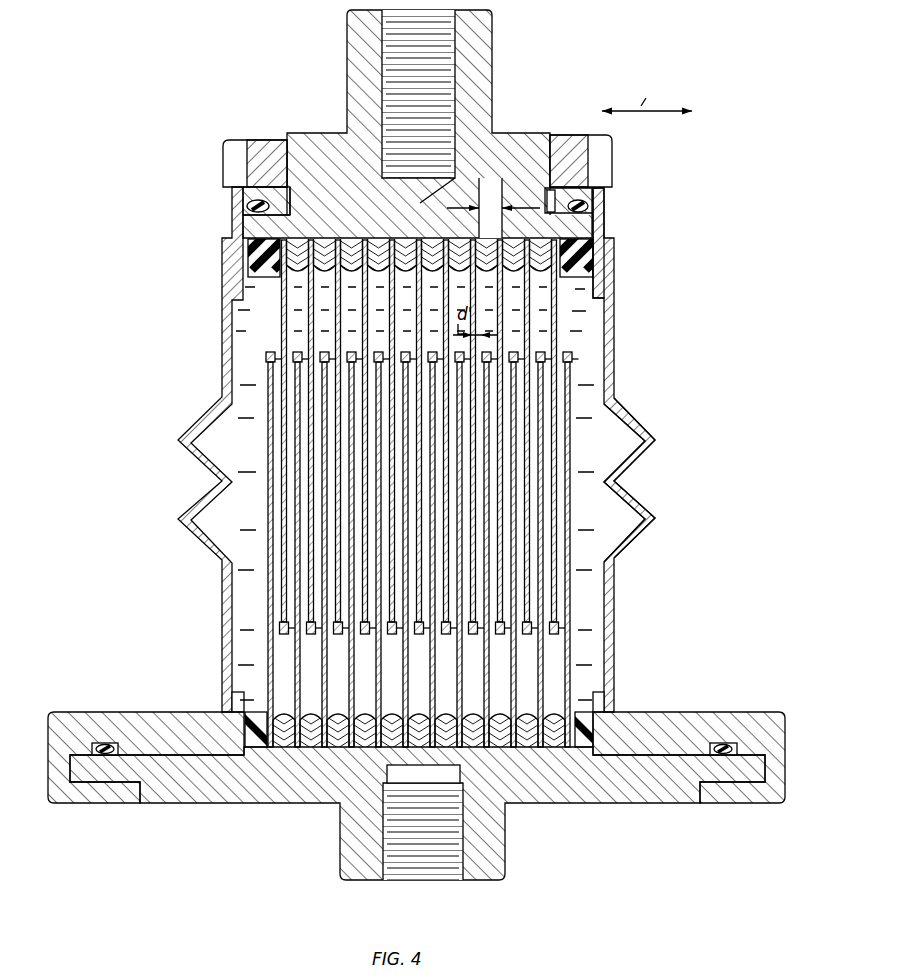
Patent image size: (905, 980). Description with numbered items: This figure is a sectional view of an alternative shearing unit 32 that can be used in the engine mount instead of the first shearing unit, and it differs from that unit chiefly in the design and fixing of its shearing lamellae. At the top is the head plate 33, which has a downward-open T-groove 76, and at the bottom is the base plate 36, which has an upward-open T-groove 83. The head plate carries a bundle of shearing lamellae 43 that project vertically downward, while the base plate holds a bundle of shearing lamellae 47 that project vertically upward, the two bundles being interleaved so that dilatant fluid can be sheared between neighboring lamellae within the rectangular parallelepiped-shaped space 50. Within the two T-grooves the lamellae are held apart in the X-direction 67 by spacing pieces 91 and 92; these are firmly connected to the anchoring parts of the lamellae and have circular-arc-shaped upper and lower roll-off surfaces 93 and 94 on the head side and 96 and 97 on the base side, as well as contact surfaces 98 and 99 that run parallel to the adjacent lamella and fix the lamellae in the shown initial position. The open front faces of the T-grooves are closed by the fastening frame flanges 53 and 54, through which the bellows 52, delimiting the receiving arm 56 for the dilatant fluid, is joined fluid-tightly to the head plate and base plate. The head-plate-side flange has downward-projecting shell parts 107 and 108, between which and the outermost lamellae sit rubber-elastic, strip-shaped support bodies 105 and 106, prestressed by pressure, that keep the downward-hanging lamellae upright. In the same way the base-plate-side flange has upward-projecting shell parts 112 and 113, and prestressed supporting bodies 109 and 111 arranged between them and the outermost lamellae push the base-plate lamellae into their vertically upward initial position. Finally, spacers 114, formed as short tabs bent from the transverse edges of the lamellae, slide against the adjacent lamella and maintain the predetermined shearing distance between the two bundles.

The shearing unit 32 is at (520, 95).
The head plate 33 is at (302, 140).
The base plate 36 is at (178, 790).
The shearing lamellae 43 is at (531, 327).
The shearing lamellae 47 is at (550, 579).
The rectangular parallelepiped-shaped space 50 is at (537, 350).
The bellows 52 is at (630, 493).
The fastening frame flange 53 is at (605, 201).
The fastening frame flange 54 is at (660, 718).
The receiving arm 56 is at (593, 381).
The X-direction 67 is at (647, 98).
The T-groove 76 is at (400, 235).
The T-groove 83 is at (440, 752).
The spacing pieces 91 is at (541, 275).
The spacing pieces 92 is at (545, 752).
The upper roll-off surface 93 is at (316, 233).
The lower roll-off surface 94 is at (297, 278).
The upper roll-off surface 96 is at (278, 710).
The lower roll-off surface 97 is at (313, 750).
The contact surface 98 is at (444, 262).
The contact surface 99 is at (333, 750).
The support body 105 is at (256, 251).
The support body 106 is at (592, 263).
The shell part 107 is at (228, 288).
The shell part 108 is at (600, 284).
The supporting body 109 is at (258, 752).
The supporting body 111 is at (581, 710).
The shell part 112 is at (233, 700).
The shell part 113 is at (600, 701).
The spacer 114 is at (283, 642).